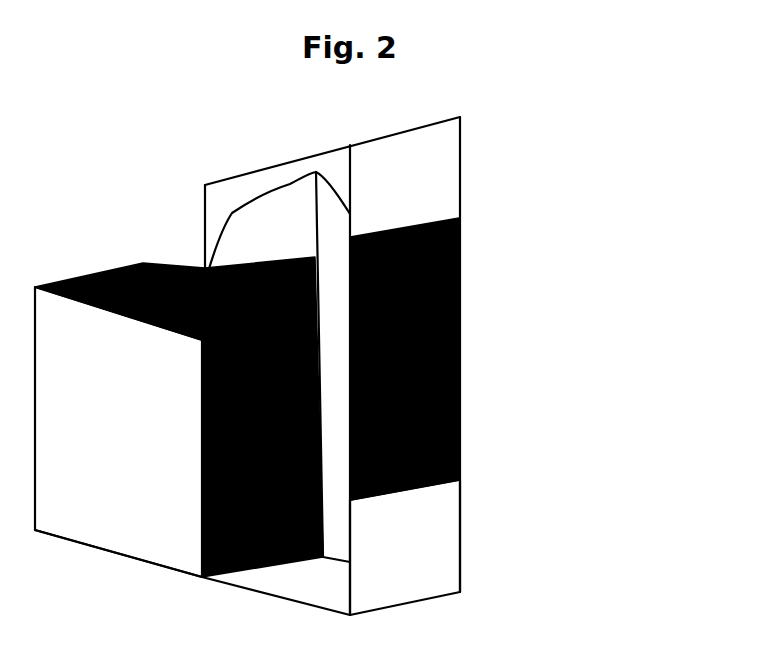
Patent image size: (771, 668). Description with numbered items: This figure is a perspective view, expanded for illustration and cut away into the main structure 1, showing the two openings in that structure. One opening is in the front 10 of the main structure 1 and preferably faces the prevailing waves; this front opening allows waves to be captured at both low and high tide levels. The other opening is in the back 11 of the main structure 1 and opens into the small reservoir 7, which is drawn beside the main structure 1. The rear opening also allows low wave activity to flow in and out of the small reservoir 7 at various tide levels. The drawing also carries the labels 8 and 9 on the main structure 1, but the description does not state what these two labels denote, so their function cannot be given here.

The main structure 1 is at (476, 573).
The small reservoir 7 is at (90, 257).
The boundary of coating layer 8 is at (477, 486).
The coated region 9 is at (490, 391).
The front opening 10 is at (476, 243).
The back opening 11 is at (186, 582).